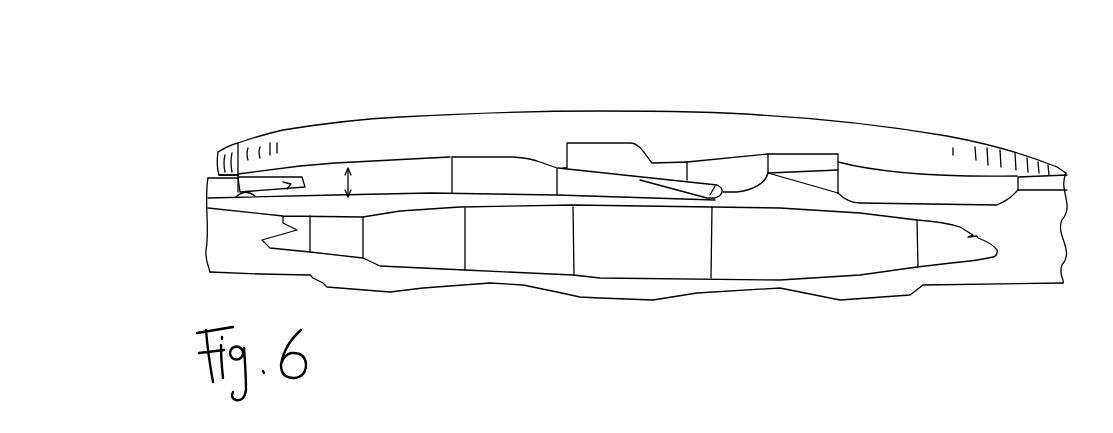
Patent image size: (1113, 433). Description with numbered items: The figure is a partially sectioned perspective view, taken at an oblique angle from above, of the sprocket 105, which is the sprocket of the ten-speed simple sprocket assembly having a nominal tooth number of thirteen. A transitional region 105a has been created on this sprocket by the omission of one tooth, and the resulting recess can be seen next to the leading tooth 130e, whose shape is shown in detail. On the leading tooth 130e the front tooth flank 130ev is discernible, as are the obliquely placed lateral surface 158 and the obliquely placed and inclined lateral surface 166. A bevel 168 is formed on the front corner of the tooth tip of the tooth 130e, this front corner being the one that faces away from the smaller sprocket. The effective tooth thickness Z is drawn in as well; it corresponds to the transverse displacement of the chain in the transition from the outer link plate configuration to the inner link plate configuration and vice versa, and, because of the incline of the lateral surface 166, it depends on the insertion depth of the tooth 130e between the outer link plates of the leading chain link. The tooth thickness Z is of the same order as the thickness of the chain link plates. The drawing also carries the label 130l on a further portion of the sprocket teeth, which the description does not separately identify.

The sprocket 105 is at (947, 135).
The transitional region 105a is at (630, 178).
The leading tooth 130e is at (318, 165).
The front tooth flank 130ev is at (382, 177).
The layer lower portion 130l is at (808, 167).
The obliquely placed lateral surface 158 is at (238, 192).
The obliquely placed and inclined lateral surface 166 is at (277, 176).
The bevel 168 is at (287, 178).
The effective tooth thickness Z is at (368, 177).